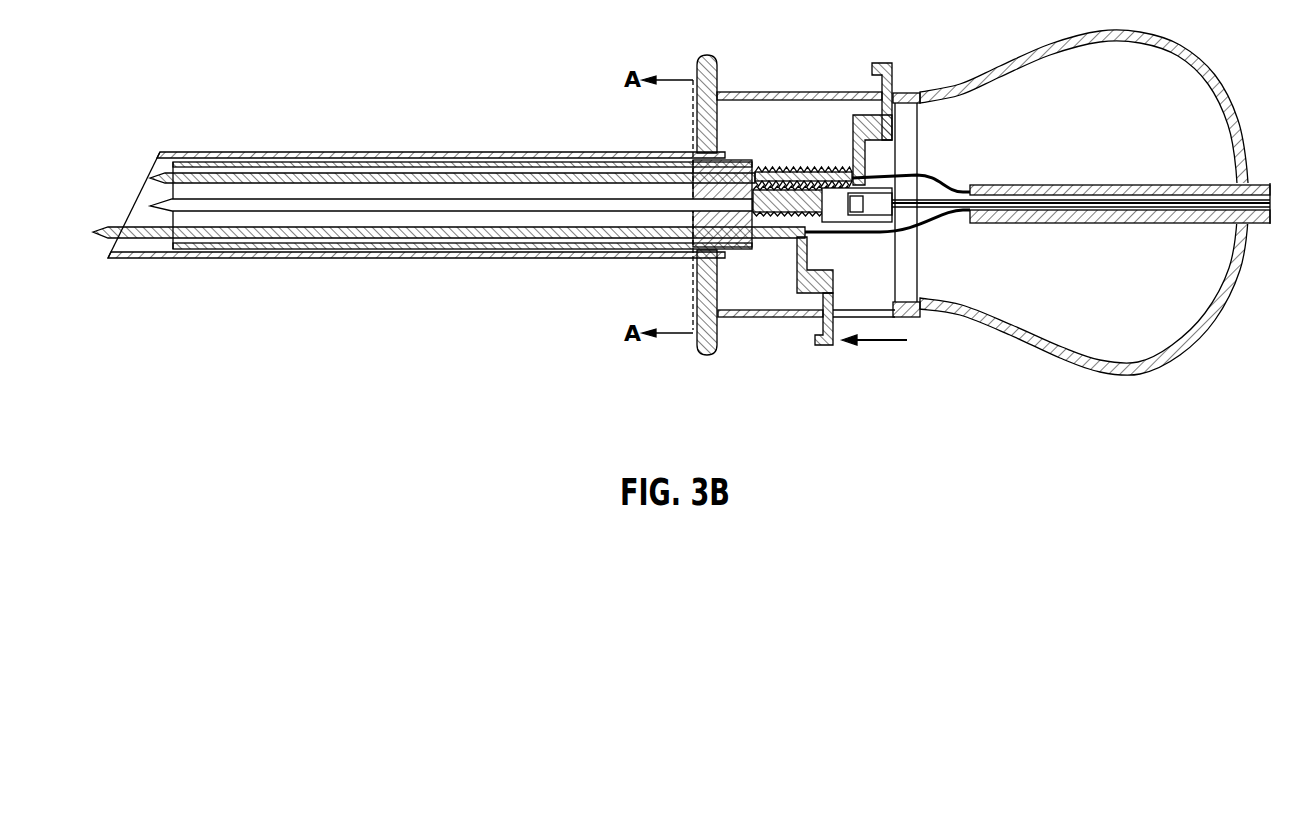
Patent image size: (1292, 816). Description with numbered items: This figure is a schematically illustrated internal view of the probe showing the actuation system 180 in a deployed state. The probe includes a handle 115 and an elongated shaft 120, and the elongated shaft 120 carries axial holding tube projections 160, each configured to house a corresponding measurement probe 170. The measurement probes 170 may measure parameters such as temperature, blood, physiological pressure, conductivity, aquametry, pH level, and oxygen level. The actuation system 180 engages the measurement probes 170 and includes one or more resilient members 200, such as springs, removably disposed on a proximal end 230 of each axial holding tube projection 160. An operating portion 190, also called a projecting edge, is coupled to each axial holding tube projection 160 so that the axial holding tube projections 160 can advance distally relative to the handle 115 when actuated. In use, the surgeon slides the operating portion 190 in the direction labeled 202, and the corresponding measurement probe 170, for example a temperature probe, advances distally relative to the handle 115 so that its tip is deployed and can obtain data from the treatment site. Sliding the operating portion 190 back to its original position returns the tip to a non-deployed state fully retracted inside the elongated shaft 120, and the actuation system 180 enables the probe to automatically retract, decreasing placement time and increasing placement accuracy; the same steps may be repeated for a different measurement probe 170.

The handle 115 is at (752, 92).
The elongated shaft 120 is at (423, 153).
The axial holding tube projections 160 is at (320, 231).
The measurement probe 170 is at (404, 249).
The actuation system 180 is at (815, 162).
The operating portion 190 is at (883, 63).
The resilient member 200 is at (778, 195).
The sliding direction 202 is at (874, 355).
The proximal end of axial holding tube projection 230 is at (777, 162).